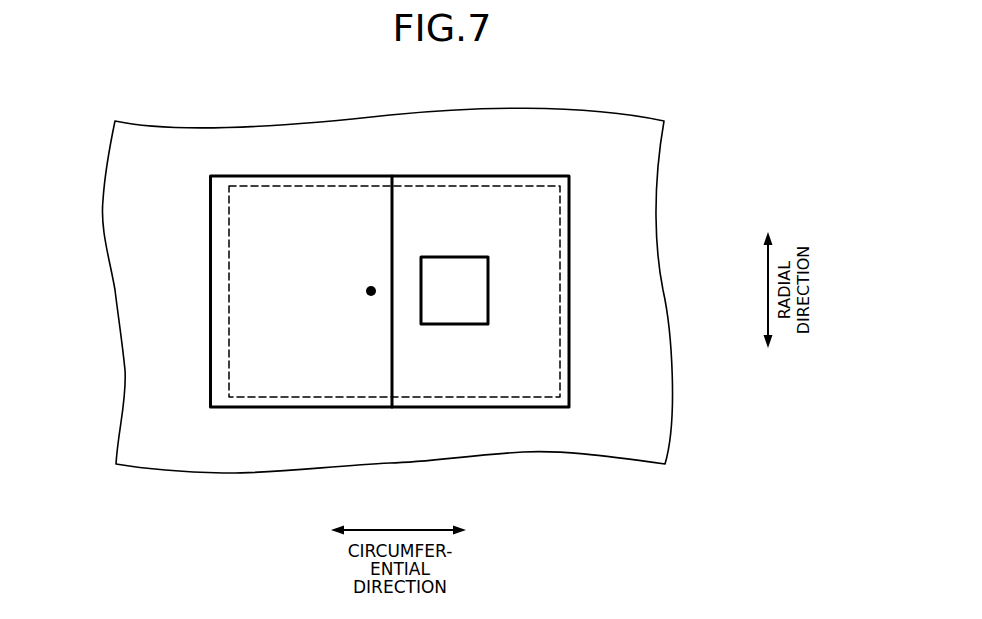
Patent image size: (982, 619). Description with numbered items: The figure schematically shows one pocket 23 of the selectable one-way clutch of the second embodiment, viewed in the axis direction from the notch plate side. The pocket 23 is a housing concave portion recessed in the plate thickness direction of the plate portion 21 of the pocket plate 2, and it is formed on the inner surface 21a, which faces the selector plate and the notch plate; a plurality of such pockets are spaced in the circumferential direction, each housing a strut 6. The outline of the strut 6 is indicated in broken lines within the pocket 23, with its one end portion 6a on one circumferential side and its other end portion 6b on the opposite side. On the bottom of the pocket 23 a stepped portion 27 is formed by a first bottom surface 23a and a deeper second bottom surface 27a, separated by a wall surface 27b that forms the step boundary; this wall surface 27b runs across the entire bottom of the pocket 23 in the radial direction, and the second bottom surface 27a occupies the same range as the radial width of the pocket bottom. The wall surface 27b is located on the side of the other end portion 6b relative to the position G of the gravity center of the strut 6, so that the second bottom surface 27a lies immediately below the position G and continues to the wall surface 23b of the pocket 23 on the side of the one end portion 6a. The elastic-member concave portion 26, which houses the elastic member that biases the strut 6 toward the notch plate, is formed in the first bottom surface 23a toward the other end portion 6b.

The pocket plate 2 is at (424, 290).
The plate portion 21 is at (661, 175).
The inner surface 21a is at (618, 283).
The pocket 23 is at (317, 166).
The first bottom surface 23a is at (451, 220).
The wall surface of the pocket 23b is at (210, 344).
The stepped portion 27 is at (283, 420).
The second bottom surface 27a is at (285, 282).
The wall surface 27b is at (391, 210).
The elastic-member concave portion 26 is at (459, 338).
The strut 6 is at (523, 408).
The one end portion 6a is at (229, 207).
The other end portion 6b is at (562, 210).
The position of the gravity center G is at (371, 296).